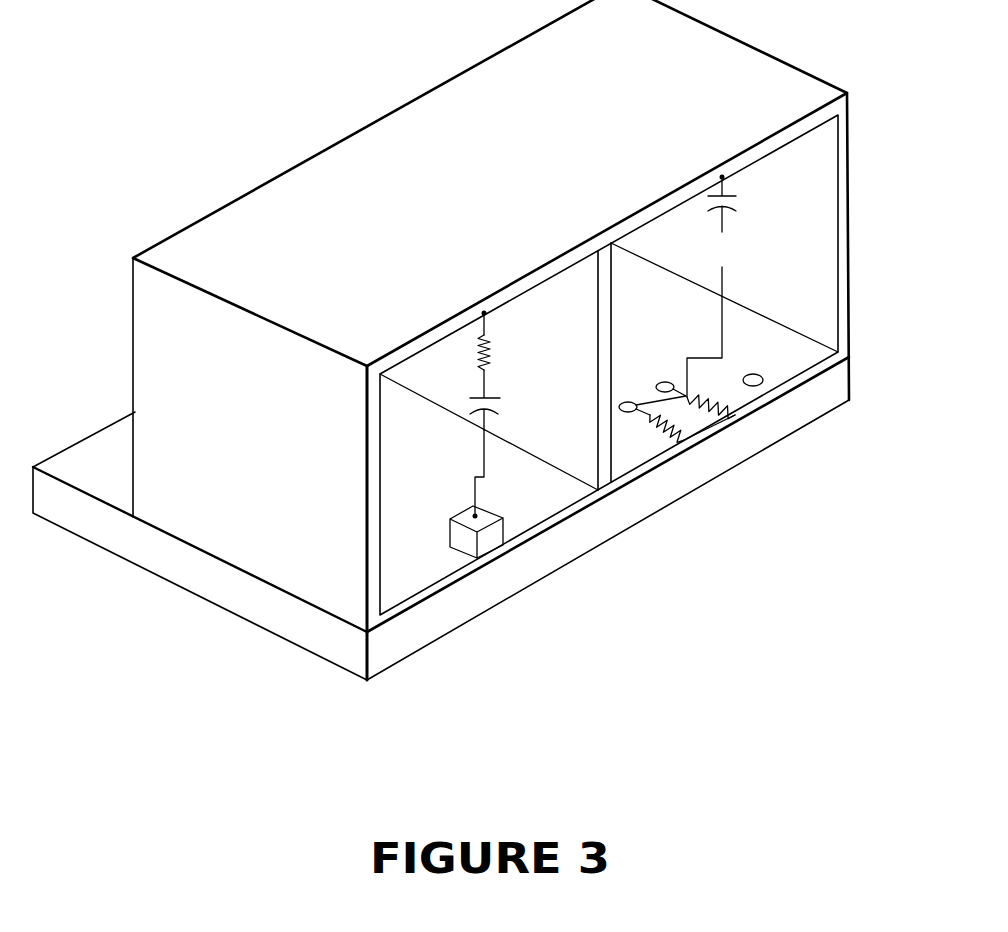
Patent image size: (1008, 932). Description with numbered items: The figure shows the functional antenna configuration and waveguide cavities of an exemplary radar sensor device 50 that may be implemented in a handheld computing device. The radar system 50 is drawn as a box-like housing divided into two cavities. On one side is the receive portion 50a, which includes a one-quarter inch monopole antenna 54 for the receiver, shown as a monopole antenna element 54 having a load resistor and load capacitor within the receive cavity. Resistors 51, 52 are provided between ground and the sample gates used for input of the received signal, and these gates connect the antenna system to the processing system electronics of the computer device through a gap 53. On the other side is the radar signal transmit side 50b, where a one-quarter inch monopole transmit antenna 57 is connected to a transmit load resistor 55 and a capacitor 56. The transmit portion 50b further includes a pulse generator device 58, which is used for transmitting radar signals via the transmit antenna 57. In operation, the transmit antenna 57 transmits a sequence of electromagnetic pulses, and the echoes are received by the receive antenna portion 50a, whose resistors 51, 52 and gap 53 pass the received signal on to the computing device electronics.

The radar sensor device 50 is at (266, 152).
The receive portion 50a is at (800, 358).
The transmit portion 50b is at (407, 572).
The resistor 51 is at (659, 440).
The resistor 52 is at (708, 412).
The gap 53 is at (758, 376).
The monopole antenna 54 is at (662, 383).
The transmit load resistor 55 is at (505, 335).
The capacitor 56 is at (514, 401).
The transmit antenna 57 is at (484, 450).
The pulse generator device 58 is at (457, 518).